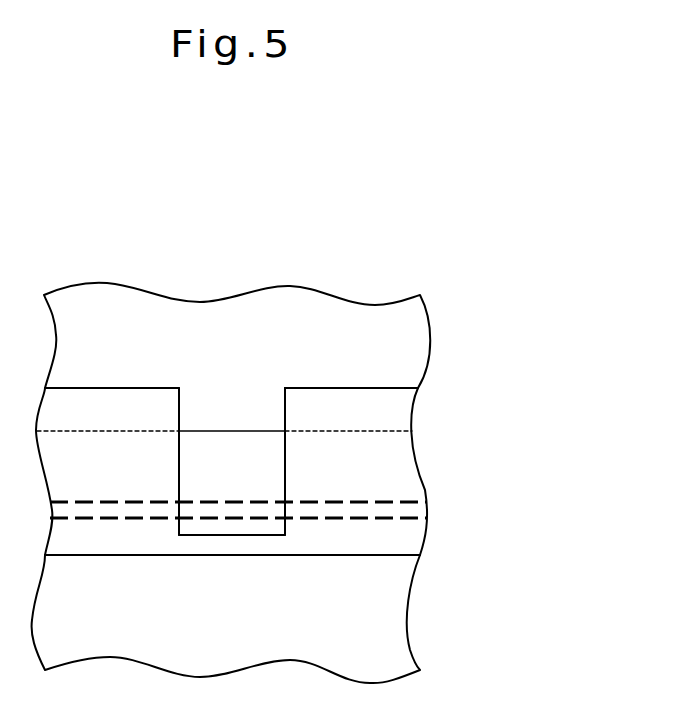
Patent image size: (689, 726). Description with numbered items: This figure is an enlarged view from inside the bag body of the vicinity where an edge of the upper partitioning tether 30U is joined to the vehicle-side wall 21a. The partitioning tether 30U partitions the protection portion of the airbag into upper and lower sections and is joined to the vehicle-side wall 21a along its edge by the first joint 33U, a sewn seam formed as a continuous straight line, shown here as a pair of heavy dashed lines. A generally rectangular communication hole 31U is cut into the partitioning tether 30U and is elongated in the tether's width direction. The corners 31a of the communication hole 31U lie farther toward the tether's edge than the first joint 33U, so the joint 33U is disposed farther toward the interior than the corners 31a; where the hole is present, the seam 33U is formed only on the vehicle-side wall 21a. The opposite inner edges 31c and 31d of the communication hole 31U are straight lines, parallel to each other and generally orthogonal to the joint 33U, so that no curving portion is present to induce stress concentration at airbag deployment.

The vehicle-side wall 21a is at (104, 312).
The partitioning tether 30U is at (385, 385).
The communication hole 31U is at (275, 396).
The inner edge 31c is at (179, 476).
The inner edge 31d is at (285, 476).
The first joint 33U is at (402, 494).
The corner 31a is at (179, 555).